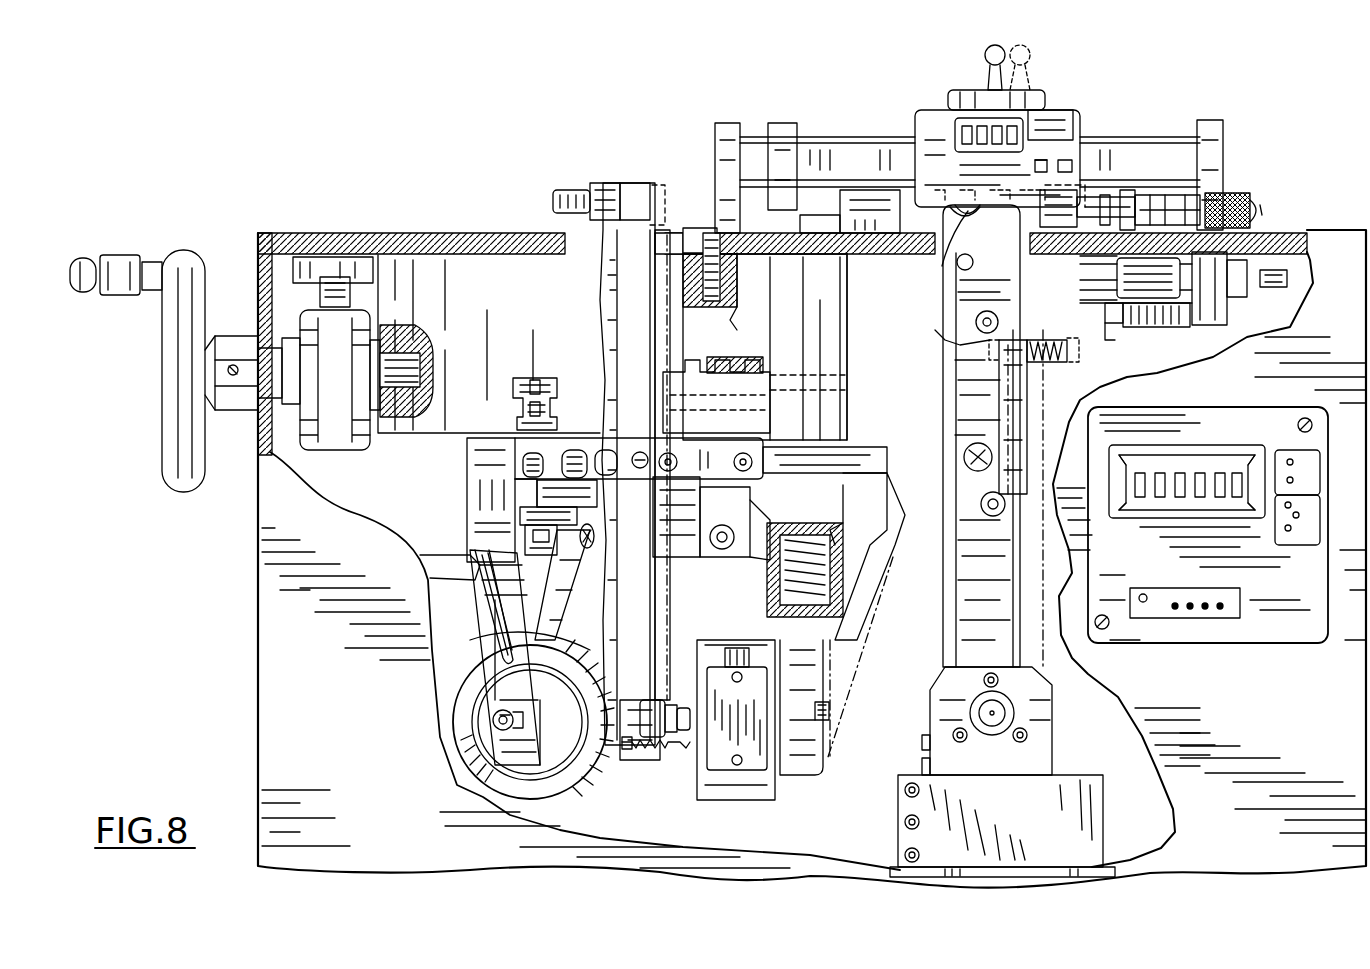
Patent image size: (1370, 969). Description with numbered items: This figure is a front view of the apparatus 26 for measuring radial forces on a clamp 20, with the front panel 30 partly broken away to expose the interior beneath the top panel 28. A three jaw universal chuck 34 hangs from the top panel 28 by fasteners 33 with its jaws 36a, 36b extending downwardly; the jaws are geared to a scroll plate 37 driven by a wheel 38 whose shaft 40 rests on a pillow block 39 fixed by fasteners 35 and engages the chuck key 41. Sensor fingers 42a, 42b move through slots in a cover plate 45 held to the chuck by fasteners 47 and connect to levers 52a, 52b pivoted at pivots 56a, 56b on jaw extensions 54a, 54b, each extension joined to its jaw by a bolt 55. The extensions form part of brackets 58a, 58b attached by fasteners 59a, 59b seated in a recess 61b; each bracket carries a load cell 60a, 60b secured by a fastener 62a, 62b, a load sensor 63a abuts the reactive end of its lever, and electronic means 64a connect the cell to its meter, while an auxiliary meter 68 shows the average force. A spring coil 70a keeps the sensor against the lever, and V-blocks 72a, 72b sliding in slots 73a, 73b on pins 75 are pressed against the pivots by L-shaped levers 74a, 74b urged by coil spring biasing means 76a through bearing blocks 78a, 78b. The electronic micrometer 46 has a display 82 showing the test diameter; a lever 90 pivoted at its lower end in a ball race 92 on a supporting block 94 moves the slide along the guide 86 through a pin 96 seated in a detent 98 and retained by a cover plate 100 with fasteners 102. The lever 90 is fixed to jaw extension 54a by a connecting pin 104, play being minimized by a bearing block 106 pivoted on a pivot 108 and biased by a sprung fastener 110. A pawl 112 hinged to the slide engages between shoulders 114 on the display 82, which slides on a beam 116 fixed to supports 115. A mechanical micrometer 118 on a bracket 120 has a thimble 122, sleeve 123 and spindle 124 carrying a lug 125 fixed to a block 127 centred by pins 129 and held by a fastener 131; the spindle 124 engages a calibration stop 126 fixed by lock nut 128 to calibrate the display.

The clamp 20 is at (558, 190).
The apparatus 26 is at (352, 170).
The top panel 28 is at (415, 233).
The front panel 30 is at (822, 868).
The fasteners 33 is at (845, 262).
The three jaw universal chuck 34 is at (845, 305).
The fasteners 35 is at (315, 262).
The chuck jaw 36a is at (755, 360).
The chuck jaw 36b is at (545, 390).
The scroll plate 37 is at (718, 358).
The wheel 38 is at (190, 252).
The pillow block 39 is at (335, 440).
The shaft 40 is at (268, 355).
The chuck key 41 is at (425, 352).
The sensor finger 42a is at (635, 183).
The sensor finger 42b is at (605, 183).
The cover plate 45 is at (520, 233).
The electronic micrometer 46 is at (1082, 92).
The fasteners 47 is at (705, 228).
The lever 52a is at (660, 600).
The lever 52b is at (598, 258).
The jaw extension 54a is at (890, 515).
The jaw extension 54b is at (550, 515).
The bolt 55 is at (490, 500).
The pivot 56a is at (540, 395).
The pivot 56b is at (548, 425).
The bracket 58a is at (823, 760).
The bracket 58b is at (490, 640).
The fastener 59a is at (860, 540).
The fastener 59b is at (430, 577).
The load cell 60a is at (720, 790).
The load cell 60b is at (577, 765).
The recess 61b is at (480, 630).
The fastener 62a is at (832, 712).
The fastener 62b is at (498, 720).
The load sensor 63a is at (655, 700).
The electronic means 64a is at (760, 780).
The auxiliary meter 68 is at (1225, 412).
The spring coil 70a is at (645, 752).
The V-block 72a is at (685, 530).
The V-block 72b is at (530, 460).
The slot 73a is at (790, 462).
The slot 73b is at (575, 465).
The L-shaped lever 74a is at (725, 560).
The L-shaped lever 74b is at (540, 557).
The pins 75 is at (545, 443).
The coil spring biasing means 76a is at (835, 580).
The bearing block 78a is at (760, 560).
The bearing block 78b is at (582, 536).
The electronic display 82 is at (918, 115).
The guide 86 is at (843, 215).
The lever 90 is at (946, 360).
The ball race 92 is at (1012, 712).
The supporting block 94 is at (1050, 785).
The pin 96 is at (945, 172).
The detent 98 is at (957, 262).
The cover plate 100 is at (950, 340).
The fasteners 102 is at (976, 322).
The connecting pin 104 is at (965, 455).
The bearing block 106 is at (1005, 400).
The pivot 108 is at (1002, 515).
The sprung fastener 110 is at (1050, 362).
The pawl 112 is at (985, 55).
The shoulders 114 is at (960, 95).
The supports 115 is at (725, 123).
The beam 116 is at (830, 137).
The mechanical micrometer 118 is at (1265, 192).
The bracket 120 is at (1227, 312).
The thimble 122 is at (1230, 193).
The sleeve 123 is at (1175, 205).
The spindle 124 is at (1092, 197).
The lug 125 is at (1115, 272).
The calibration stop 126 is at (1060, 190).
The block 127 is at (1195, 325).
The lock nut 128 is at (1127, 190).
The pins 129 is at (1137, 323).
The fastener 131 is at (1123, 327).